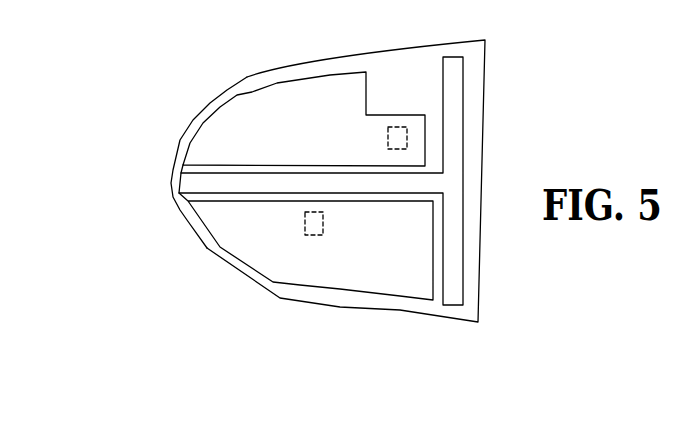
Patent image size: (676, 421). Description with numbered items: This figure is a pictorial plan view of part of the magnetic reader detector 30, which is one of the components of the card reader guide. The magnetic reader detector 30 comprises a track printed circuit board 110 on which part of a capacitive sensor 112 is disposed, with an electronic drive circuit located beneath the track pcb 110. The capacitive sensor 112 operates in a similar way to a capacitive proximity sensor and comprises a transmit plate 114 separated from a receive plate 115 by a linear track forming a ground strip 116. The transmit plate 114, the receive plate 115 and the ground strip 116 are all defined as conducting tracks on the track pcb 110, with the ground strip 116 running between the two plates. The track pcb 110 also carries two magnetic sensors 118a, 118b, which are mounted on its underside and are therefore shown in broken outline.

The magnetic reader detector 30 is at (145, 352).
The track printed circuit board 110 is at (277, 298).
The capacitive sensor 112 is at (157, 218).
The transmit plate 114 is at (220, 228).
The receive plate 115 is at (237, 123).
The ground strip 116 is at (453, 108).
The magnetic sensor 118a is at (323, 232).
The magnetic sensor 118b is at (397, 127).